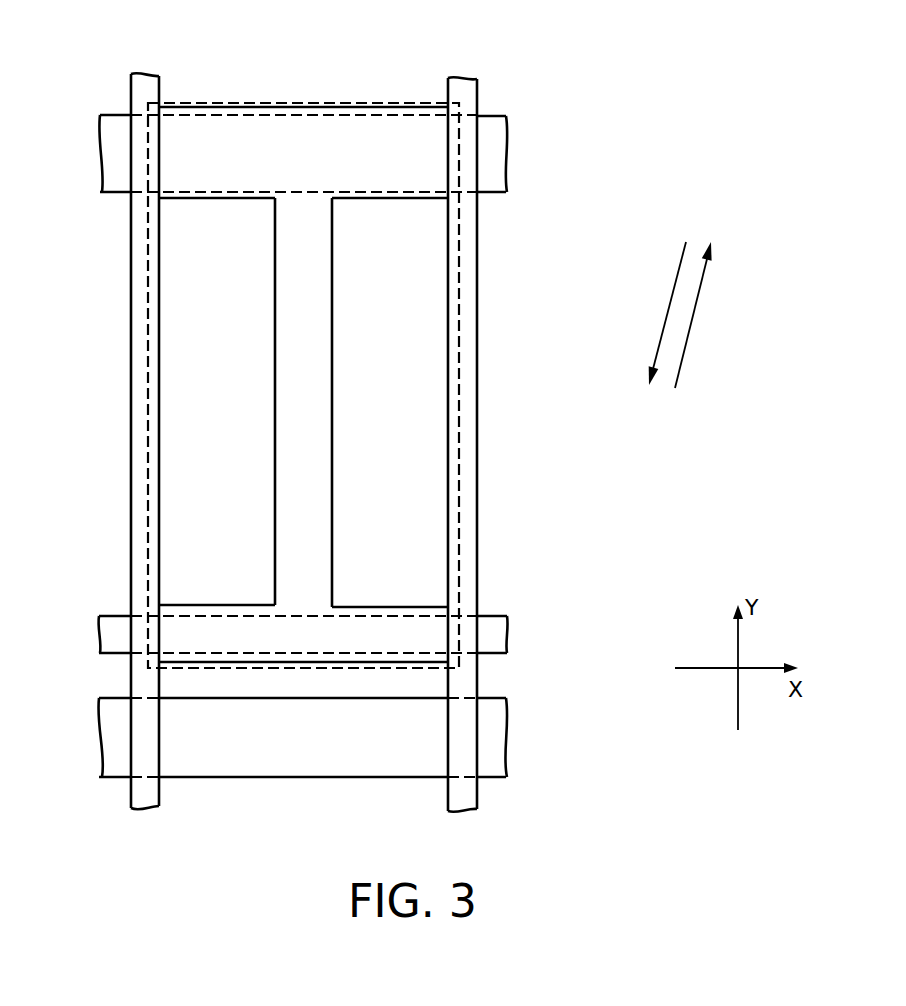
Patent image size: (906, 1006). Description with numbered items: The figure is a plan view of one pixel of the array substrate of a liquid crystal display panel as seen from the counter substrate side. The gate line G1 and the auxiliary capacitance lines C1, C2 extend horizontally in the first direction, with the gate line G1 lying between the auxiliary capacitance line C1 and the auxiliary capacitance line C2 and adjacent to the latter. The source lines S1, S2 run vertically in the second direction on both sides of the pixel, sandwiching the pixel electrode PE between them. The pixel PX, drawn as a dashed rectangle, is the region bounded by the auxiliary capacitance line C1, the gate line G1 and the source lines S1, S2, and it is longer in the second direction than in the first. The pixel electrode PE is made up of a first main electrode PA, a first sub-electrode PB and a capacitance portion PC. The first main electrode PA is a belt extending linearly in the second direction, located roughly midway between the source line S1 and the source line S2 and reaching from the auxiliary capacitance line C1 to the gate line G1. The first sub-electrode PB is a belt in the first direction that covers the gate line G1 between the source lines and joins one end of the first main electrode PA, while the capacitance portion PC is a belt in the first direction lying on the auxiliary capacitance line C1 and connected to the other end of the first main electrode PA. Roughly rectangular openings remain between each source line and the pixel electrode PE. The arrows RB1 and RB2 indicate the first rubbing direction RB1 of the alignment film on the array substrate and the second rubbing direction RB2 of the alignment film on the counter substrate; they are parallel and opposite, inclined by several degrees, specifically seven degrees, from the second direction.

The source line S1 is at (145, 73).
The source line S2 is at (457, 77).
The auxiliary capacitance line C1 is at (99, 155).
The gate line G1 is at (98, 640).
The auxiliary capacitance line C2 is at (100, 745).
The pixel PX is at (459, 283).
The pixel electrode PE is at (351, 384).
The capacitance portion PC is at (377, 177).
The first main electrode PA is at (325, 462).
The first sub-electrode PB is at (368, 607).
The first rubbing direction RB1 is at (695, 312).
The second rubbing direction RB2 is at (668, 300).